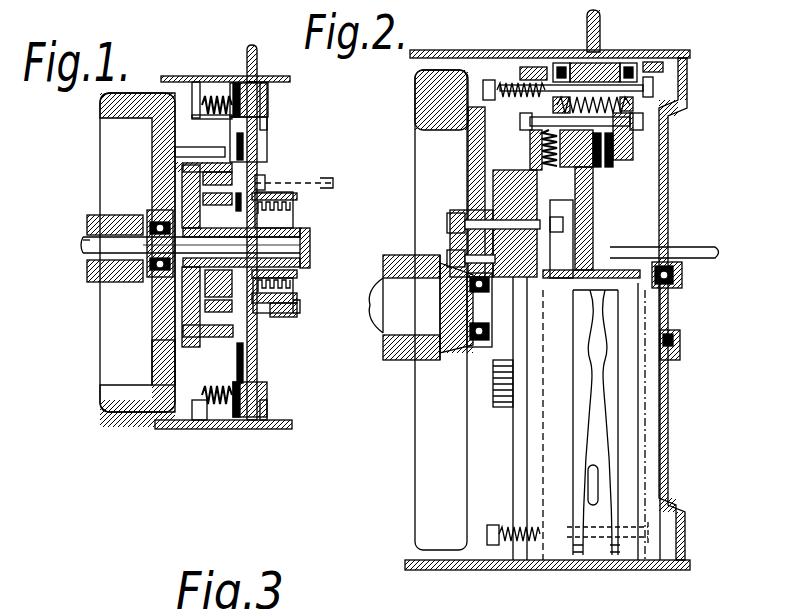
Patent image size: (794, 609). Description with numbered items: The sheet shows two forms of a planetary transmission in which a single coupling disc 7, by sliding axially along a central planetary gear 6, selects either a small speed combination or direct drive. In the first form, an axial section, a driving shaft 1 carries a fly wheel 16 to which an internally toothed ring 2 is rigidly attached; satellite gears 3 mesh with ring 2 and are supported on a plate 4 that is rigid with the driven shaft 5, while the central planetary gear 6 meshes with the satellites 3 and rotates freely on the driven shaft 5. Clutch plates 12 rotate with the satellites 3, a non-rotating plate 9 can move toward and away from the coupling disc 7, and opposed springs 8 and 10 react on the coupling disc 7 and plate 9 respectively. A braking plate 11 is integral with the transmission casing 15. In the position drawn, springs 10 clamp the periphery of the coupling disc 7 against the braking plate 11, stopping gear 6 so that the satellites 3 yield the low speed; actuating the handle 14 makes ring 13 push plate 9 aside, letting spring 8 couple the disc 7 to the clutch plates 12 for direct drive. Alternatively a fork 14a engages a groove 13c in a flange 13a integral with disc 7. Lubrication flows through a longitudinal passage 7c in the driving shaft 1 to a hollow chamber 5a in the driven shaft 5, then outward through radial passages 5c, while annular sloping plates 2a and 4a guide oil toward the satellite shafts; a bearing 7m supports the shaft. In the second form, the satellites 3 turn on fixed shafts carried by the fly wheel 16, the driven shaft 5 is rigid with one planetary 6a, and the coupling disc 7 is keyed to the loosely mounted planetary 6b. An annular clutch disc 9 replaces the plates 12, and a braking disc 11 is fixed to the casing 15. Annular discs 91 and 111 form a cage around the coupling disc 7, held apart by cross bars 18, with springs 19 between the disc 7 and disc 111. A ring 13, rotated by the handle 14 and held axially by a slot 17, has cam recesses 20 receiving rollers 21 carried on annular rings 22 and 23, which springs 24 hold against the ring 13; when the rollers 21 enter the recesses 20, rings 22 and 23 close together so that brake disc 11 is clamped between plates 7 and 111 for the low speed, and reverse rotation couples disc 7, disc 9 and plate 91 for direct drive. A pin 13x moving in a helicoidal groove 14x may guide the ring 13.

In FIG. 1, the driving shaft 1 is at (126, 218).
In FIG. 2, the driving shaft 1 is at (396, 316).
In FIG. 1, the internally toothed ring 2 is at (160, 370).
In FIG. 1, the annular sloping plate 2a is at (182, 297).
In FIG. 1, the satellite gears 3 is at (275, 318).
In FIG. 2, the satellite gears 3 is at (516, 195).
In FIG. 1, the plate 4 is at (200, 305).
In FIG. 1, the annular sloping plate 4a is at (182, 320).
In FIG. 1, the driven shaft 5 is at (309, 262).
In FIG. 2, the driven shaft 5 is at (680, 316).
In FIG. 1, the hollow chamber 5a is at (260, 250).
In FIG. 1, the radial passages 5c is at (305, 234).
In FIG. 1, the central planetary gear 6 is at (222, 217).
In FIG. 2, the planetary 6a is at (493, 380).
In FIG. 2, the planetary 6b is at (447, 233).
In FIG. 1, the coupling disc 7 is at (266, 182).
In FIG. 2, the coupling disc 7 is at (576, 205).
In FIG. 1, the longitudinal passage 7c is at (86, 241).
In FIG. 1, the bearing 7m is at (160, 214).
In FIG. 1, the spring 8 is at (294, 208).
In FIG. 1, the plate 9 is at (227, 92).
In FIG. 2, the plate 9 is at (545, 150).
In FIG. 2, the annular disc 91 is at (524, 126).
In FIG. 1, the springs 10 is at (210, 92).
In FIG. 1, the braking plate 11 is at (268, 100).
In FIG. 2, the braking plate 11 is at (615, 160).
In FIG. 2, the annular disc 111 is at (634, 135).
In FIG. 1, the clutch plates 12 is at (244, 147).
In FIG. 1, the ring 13 is at (260, 84).
In FIG. 2, the ring 13 is at (608, 63).
In FIG. 1, the flange 13a is at (272, 300).
In FIG. 1, the groove 13c is at (295, 322).
In FIG. 2, the pin 13x is at (616, 560).
In FIG. 1, the handle 14 is at (254, 46).
In FIG. 2, the handle 14 is at (587, 20).
In FIG. 1, the fork 14a is at (326, 178).
In FIG. 2, the fork 14a is at (698, 247).
In FIG. 2, the helicoidal groove 14x is at (578, 560).
In FIG. 1, the transmission casing 15 is at (275, 430).
In FIG. 2, the transmission casing 15 is at (450, 571).
In FIG. 1, the fly wheel 16 is at (160, 151).
In FIG. 2, the fly wheel 16 is at (470, 162).
In FIG. 2, the slot 17 is at (598, 487).
In FIG. 2, the cross bars 18 is at (640, 118).
In FIG. 2, the springs 19 is at (654, 90).
In FIG. 2, the recessed portions 20 is at (612, 350).
In FIG. 2, the rollers 21 is at (561, 63).
In FIG. 2, the annular ring 22 is at (531, 66).
In FIG. 2, the annular ring 23 is at (656, 62).
In FIG. 2, the springs 24 is at (494, 80).